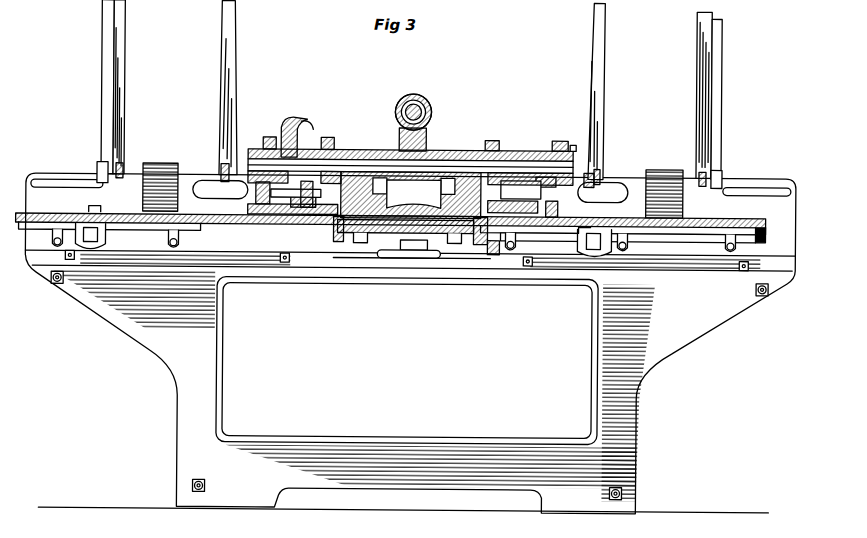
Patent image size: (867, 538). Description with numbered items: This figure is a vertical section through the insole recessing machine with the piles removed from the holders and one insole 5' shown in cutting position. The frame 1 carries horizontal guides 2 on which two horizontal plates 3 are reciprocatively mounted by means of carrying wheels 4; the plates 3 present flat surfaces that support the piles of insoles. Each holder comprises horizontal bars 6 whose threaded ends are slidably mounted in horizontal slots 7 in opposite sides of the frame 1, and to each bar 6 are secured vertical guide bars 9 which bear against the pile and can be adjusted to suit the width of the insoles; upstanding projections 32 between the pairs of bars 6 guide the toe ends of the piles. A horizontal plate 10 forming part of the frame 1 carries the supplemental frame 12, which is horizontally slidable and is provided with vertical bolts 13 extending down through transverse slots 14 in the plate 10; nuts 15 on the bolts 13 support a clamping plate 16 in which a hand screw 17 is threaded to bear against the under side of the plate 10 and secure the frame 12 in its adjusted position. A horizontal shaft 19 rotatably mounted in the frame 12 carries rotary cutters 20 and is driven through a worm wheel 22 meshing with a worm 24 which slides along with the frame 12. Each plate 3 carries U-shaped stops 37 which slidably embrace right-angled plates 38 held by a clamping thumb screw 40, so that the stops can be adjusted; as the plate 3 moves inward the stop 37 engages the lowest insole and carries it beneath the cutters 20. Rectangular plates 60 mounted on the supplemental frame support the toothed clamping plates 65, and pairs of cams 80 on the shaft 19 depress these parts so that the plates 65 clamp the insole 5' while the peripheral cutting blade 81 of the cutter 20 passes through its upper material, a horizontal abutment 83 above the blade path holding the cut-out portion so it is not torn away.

The frame 1 is at (110, 318).
The horizontal guides 2 is at (125, 270).
The horizontal plates 3 is at (196, 228).
The carrying wheels 4 is at (57, 248).
The insole 5' is at (524, 253).
The horizontal bars 6 is at (121, 168).
The horizontal slots 7 is at (68, 188).
The vertical guide bars 9 is at (114, 65).
The horizontal plate 10 is at (380, 226).
The supplemental frame 12 is at (440, 175).
The vertical bolts 13 is at (360, 246).
The transverse slots 14 is at (335, 226).
The nuts 15 is at (340, 237).
The clamping plate 16 is at (428, 252).
The hand screw 17 is at (406, 260).
The horizontal shaft 19 is at (514, 165).
The rotary cutters 20 is at (292, 118).
The worm wheel 22 is at (398, 135).
The worm 24 is at (426, 104).
The upstanding projections 32 is at (166, 163).
The U-shaped stops 37 is at (98, 210).
The right-angled horizontal plates 38 is at (660, 242).
The clamping thumb screw 40 is at (96, 249).
The rectangular plates 60 is at (275, 196).
The clamping plates 65 is at (288, 204).
The cams 80 is at (268, 137).
The peripheral cutting blade 81 is at (284, 118).
The horizontal abutment 83 is at (300, 192).